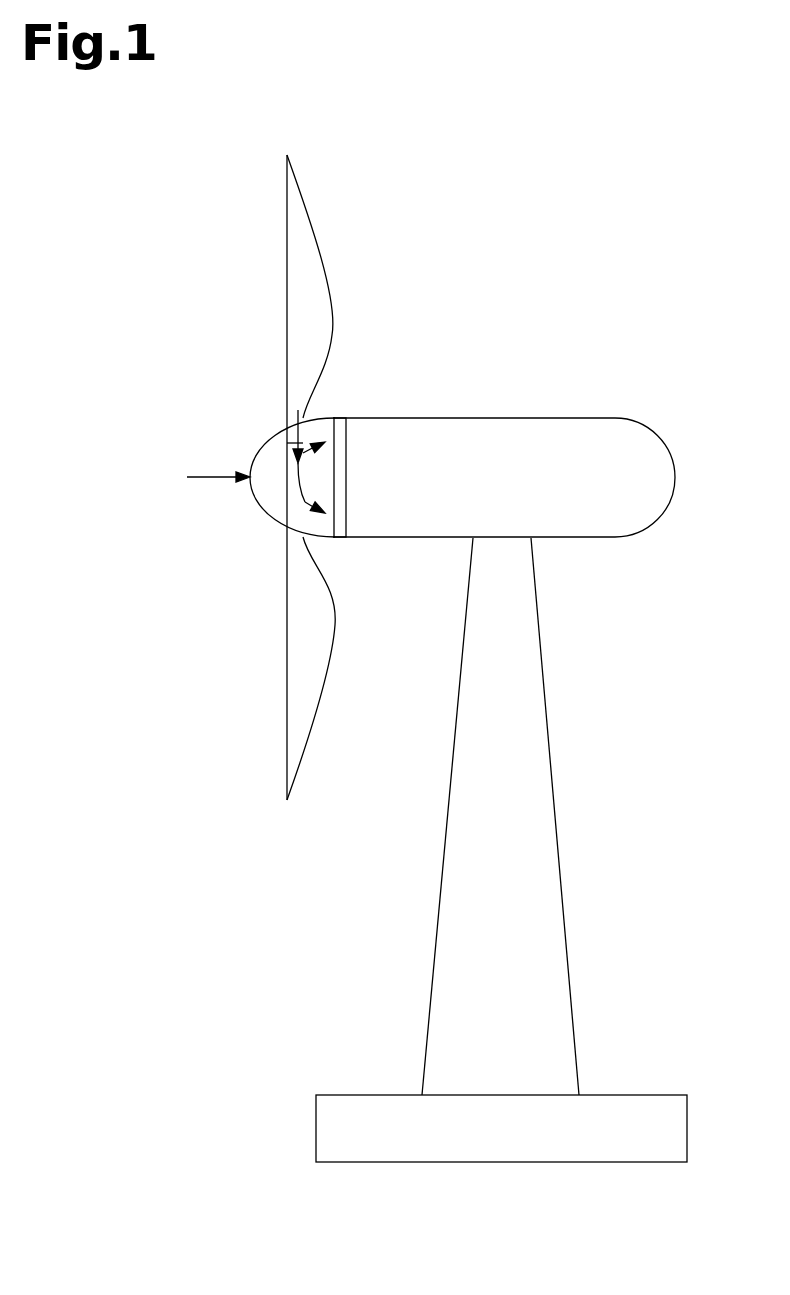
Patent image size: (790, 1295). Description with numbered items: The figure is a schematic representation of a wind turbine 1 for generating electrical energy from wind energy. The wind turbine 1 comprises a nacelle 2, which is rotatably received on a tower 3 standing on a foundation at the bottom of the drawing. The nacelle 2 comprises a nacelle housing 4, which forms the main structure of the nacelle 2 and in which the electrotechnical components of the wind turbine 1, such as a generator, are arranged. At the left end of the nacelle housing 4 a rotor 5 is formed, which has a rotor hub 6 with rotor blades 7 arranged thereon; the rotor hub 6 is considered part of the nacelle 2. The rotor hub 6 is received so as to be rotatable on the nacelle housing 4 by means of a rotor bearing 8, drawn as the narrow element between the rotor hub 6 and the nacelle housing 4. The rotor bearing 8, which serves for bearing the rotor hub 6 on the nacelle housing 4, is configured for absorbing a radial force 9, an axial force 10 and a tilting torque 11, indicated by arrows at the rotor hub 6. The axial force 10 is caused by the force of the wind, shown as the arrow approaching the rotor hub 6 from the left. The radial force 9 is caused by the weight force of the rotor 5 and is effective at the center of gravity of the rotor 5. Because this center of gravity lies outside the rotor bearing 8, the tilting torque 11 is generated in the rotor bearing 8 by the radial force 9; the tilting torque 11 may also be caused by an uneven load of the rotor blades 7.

The wind turbine 1 is at (590, 195).
The nacelle 2 is at (572, 332).
The tower 3 is at (528, 772).
The nacelle housing 4 is at (570, 437).
The rotor 5 is at (250, 437).
The rotor hub 6 is at (298, 514).
The rotor blades 7 is at (312, 307).
The rotor bearing 8 is at (345, 415).
The radial force 9 is at (295, 443).
The axial force 10 is at (215, 478).
The tilting torque 11 is at (303, 498).